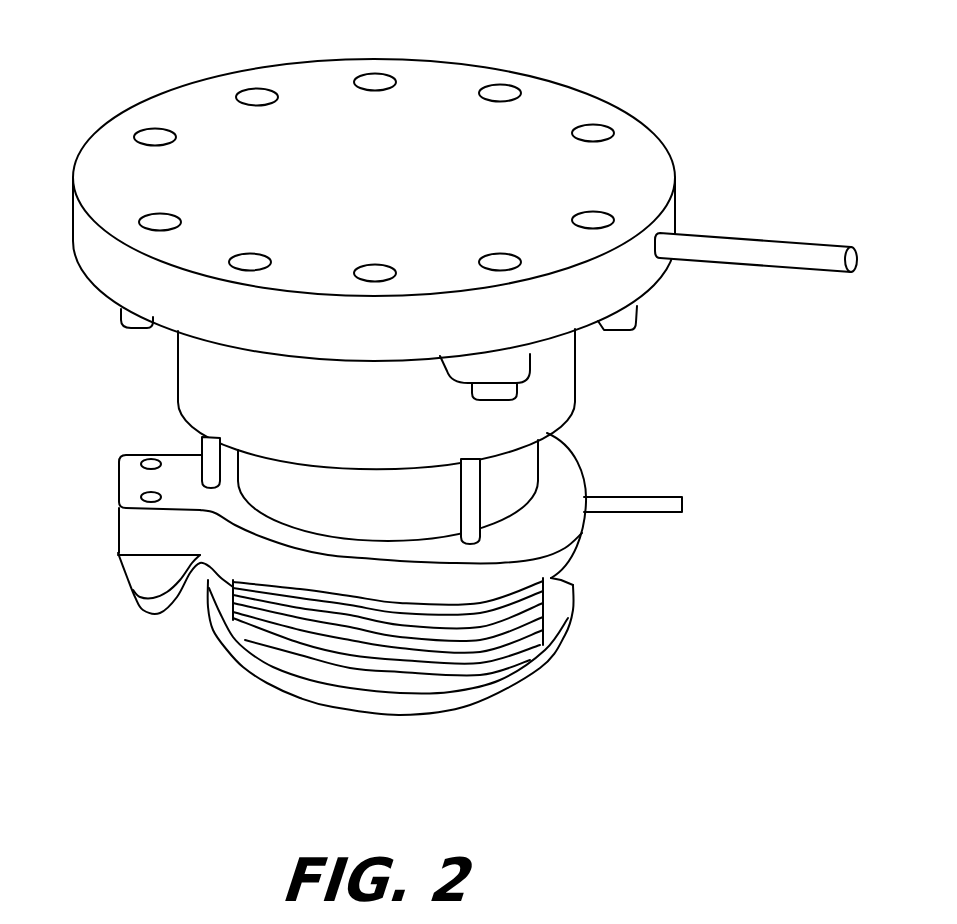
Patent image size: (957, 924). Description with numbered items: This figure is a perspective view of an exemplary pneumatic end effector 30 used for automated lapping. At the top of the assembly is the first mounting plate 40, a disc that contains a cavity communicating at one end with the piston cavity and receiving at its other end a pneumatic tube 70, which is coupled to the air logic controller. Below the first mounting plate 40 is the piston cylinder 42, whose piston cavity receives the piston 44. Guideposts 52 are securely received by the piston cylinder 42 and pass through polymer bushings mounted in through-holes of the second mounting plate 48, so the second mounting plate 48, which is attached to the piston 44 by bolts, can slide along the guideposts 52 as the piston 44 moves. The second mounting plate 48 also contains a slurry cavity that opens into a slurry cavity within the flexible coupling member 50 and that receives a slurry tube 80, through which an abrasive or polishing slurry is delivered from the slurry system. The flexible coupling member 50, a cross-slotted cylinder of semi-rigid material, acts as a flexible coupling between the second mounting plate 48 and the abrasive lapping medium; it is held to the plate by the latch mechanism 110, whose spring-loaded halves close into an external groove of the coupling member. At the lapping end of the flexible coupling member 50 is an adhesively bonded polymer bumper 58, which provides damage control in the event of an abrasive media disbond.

The pneumatic end effector 30 is at (693, 75).
The first mounting plate 40 is at (172, 103).
The piston cylinder 42 is at (198, 372).
The piston 44 is at (507, 478).
The second mounting plate 48 is at (132, 482).
The flexible coupling member 50 is at (307, 632).
The guideposts 52 is at (205, 466).
The polymer bumper 58 is at (557, 640).
The pneumatic tube 70 is at (757, 240).
The slurry tube 80 is at (650, 505).
The latch mechanism 110 is at (145, 583).